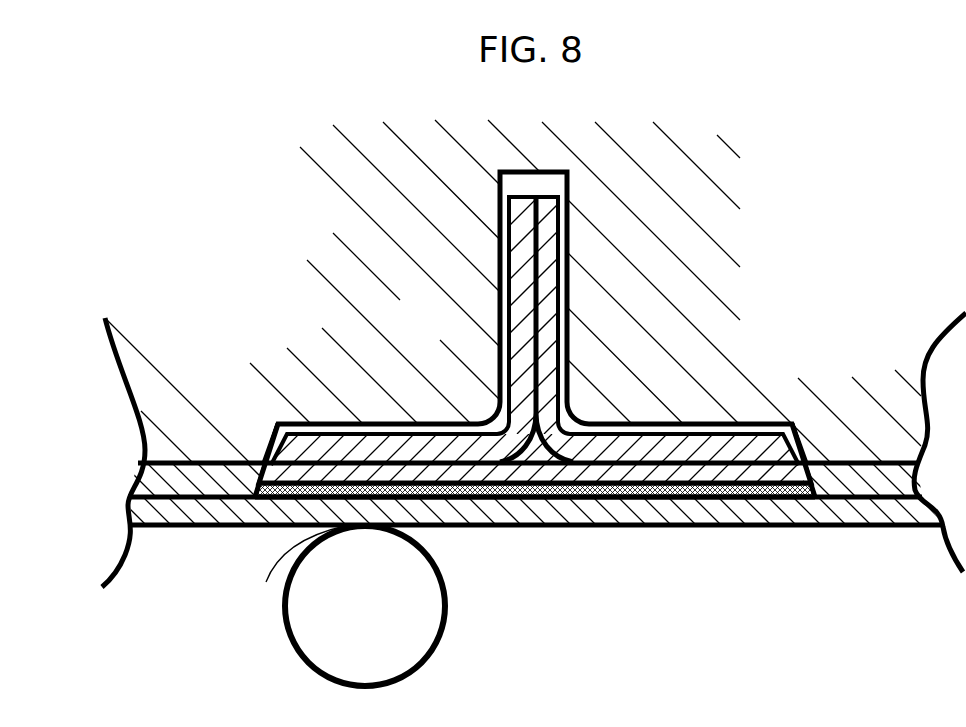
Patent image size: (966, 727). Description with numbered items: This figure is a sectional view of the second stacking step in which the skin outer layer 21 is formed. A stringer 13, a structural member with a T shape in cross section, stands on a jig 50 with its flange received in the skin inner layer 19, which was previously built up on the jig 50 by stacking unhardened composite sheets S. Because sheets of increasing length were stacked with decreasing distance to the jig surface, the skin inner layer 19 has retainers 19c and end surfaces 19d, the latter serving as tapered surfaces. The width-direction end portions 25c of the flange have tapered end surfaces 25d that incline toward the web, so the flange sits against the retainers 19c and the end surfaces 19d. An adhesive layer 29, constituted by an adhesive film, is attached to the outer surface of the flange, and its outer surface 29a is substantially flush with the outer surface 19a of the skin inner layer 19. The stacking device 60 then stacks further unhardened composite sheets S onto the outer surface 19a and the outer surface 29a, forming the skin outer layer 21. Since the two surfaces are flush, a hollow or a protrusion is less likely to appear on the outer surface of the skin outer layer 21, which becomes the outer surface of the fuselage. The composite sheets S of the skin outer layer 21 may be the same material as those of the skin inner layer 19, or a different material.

The jig 50 is at (345, 229).
The stringer 13 is at (497, 314).
The end portion 25c is at (283, 433).
The end surface 25d is at (274, 423).
The skin inner layer 19 is at (138, 480).
The outer surface 19a is at (188, 498).
The retainer 19c is at (259, 454).
The end surface 19d is at (262, 445).
The skin outer layer 21 is at (132, 508).
The adhesive layer 29 is at (662, 486).
The outer surface 29a is at (478, 498).
The stacking device 60 is at (382, 617).
The composite sheet S is at (266, 582).